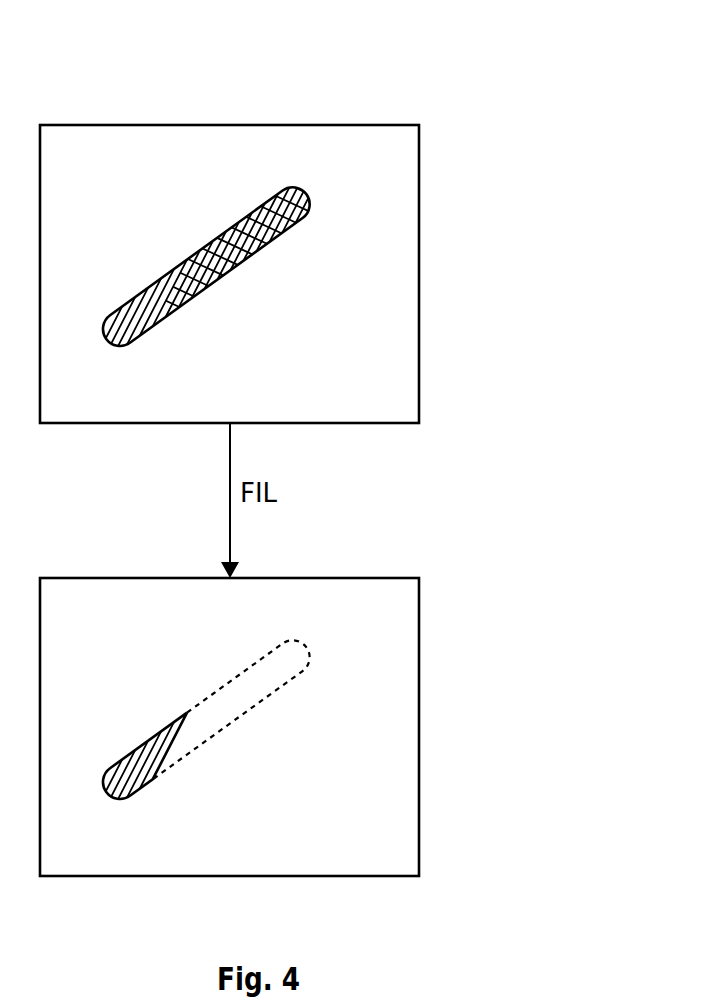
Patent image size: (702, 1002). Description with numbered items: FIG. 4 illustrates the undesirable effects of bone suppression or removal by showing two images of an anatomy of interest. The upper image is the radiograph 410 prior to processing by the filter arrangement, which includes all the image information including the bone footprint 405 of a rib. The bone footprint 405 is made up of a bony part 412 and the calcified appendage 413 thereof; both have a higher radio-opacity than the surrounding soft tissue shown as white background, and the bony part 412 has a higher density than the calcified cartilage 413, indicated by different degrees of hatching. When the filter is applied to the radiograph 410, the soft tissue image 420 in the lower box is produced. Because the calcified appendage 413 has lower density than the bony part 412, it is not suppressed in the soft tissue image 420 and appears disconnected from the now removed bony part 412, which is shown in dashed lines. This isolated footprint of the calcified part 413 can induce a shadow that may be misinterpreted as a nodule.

The bone footprint 405 is at (213, 224).
The radiograph 410 is at (430, 216).
The bony part 412 is at (267, 250).
The calcified appendage 413 is at (158, 330).
The soft tissue image 420 is at (430, 669).